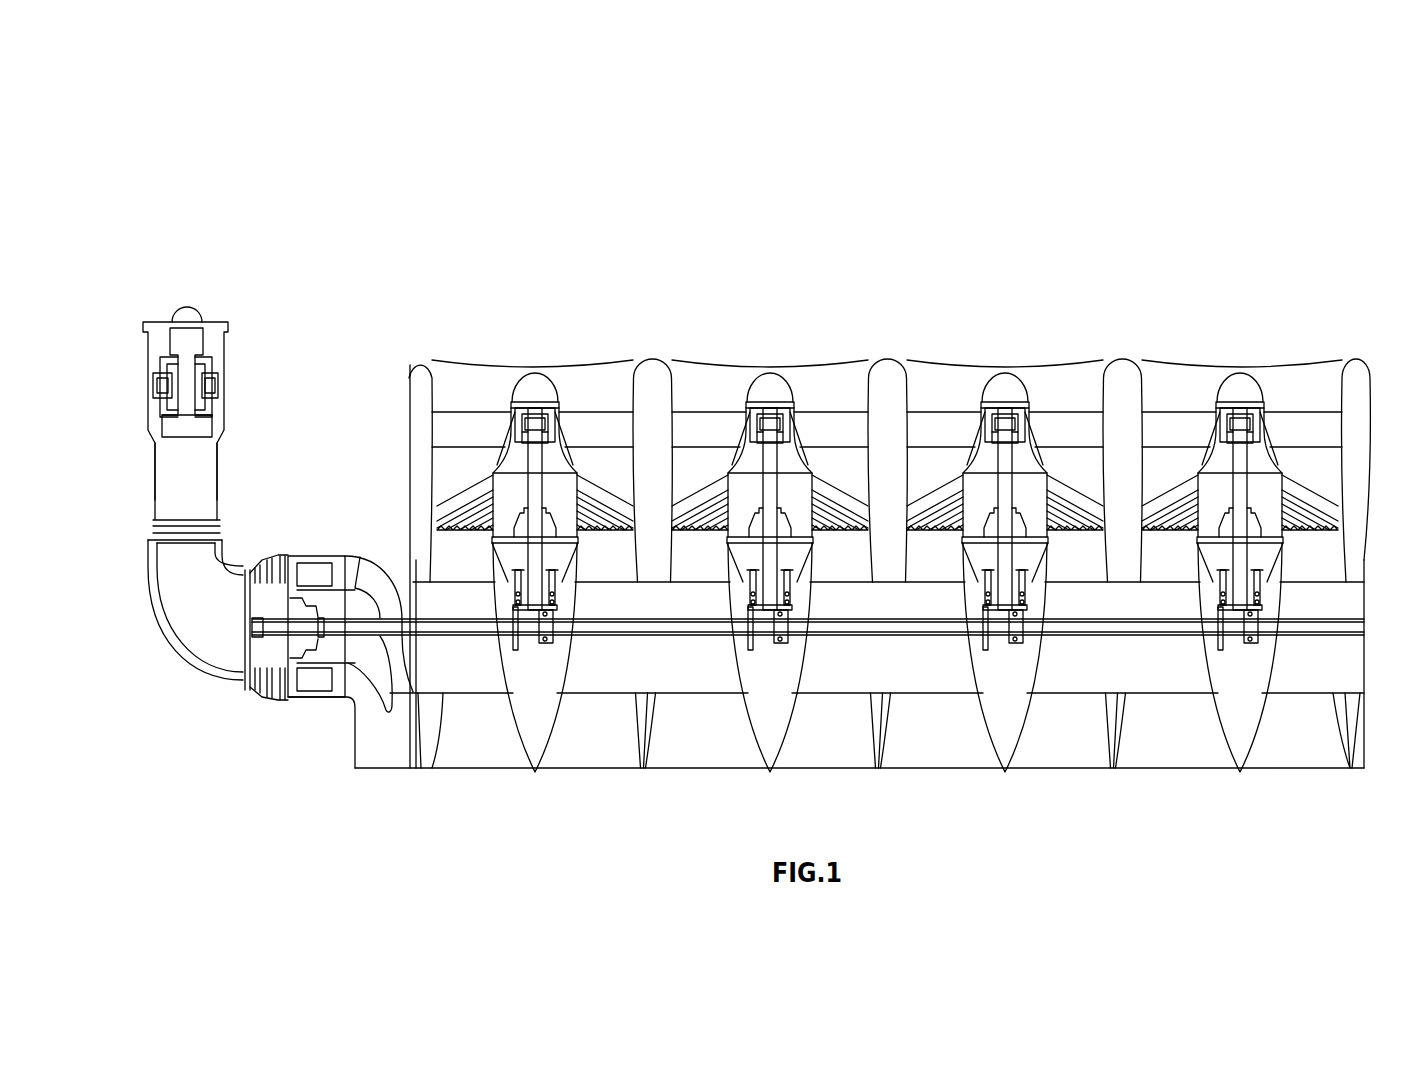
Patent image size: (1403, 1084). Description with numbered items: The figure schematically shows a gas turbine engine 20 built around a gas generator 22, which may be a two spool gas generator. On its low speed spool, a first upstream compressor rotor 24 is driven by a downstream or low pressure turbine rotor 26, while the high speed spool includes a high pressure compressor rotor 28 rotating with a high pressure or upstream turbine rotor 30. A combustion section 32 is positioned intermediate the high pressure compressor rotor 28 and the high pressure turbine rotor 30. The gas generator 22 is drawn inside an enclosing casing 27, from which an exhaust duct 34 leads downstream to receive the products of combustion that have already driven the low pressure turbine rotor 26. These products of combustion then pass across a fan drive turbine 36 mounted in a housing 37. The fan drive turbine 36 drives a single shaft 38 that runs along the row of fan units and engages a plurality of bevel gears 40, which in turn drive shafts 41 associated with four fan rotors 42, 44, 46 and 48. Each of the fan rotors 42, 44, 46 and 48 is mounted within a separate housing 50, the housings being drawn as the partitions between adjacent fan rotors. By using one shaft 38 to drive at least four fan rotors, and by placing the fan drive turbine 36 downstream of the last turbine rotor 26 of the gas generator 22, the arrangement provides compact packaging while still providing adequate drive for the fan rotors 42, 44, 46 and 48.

The gas turbine engine 20 is at (1030, 243).
The gas generator 22 is at (283, 362).
The first upstream compressor rotor 24 is at (195, 340).
The low pressure turbine rotor 26 is at (175, 427).
The housing 27 is at (155, 328).
The high pressure compressor rotor 28 is at (210, 362).
The high pressure turbine rotor 30 is at (210, 408).
The combustion section 32 is at (212, 384).
The exhaust duct 34 is at (190, 597).
The fan drive turbine 36 is at (273, 660).
The housing 37 is at (312, 556).
The shaft 38 is at (472, 630).
The bevel gears 40 is at (937, 644).
The shafts 41 is at (846, 509).
The fan rotor 42 is at (573, 425).
The fan rotor 44 is at (810, 425).
The fan rotor 46 is at (1045, 425).
The fan rotor 48 is at (1190, 425).
The housings 50 is at (425, 378).